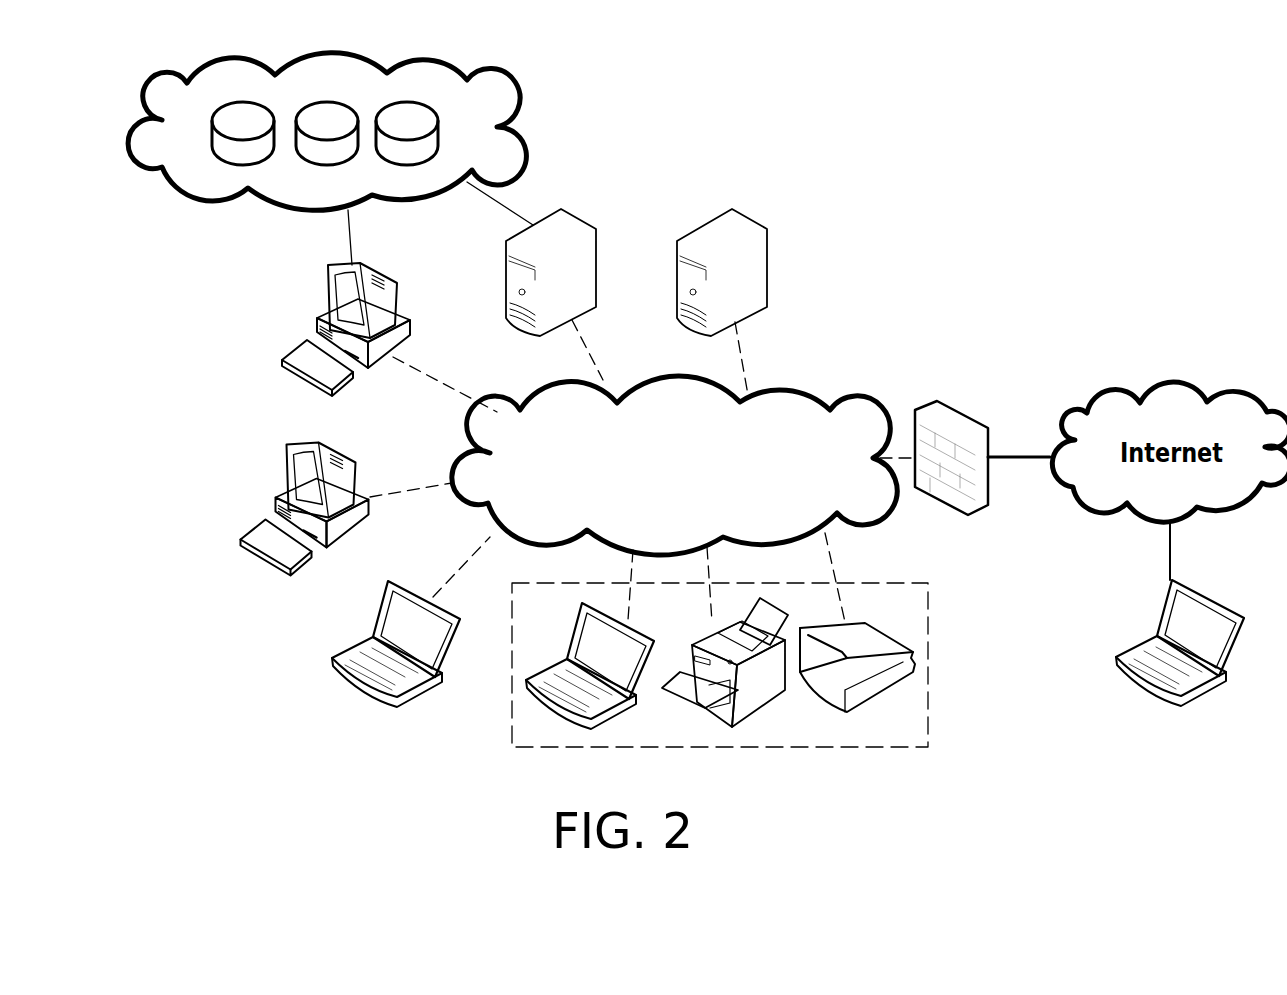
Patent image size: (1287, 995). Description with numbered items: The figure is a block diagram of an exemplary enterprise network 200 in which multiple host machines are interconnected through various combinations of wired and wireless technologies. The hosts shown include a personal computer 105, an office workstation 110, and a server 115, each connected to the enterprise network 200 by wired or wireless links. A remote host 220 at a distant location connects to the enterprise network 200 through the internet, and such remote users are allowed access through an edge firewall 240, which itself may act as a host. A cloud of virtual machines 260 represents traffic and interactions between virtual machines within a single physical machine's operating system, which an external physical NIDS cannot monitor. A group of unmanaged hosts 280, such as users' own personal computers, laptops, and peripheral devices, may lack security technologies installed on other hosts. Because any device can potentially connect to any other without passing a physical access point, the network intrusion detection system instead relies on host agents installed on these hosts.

The personal computer 105 is at (337, 678).
The office workstation 110 is at (285, 447).
The server 115 is at (733, 209).
The enterprise network 200 is at (697, 478).
The remote host 220 is at (1115, 670).
The edge firewall 240 is at (937, 401).
The virtual machines 260 is at (175, 200).
The unmanaged hosts 280 is at (782, 747).